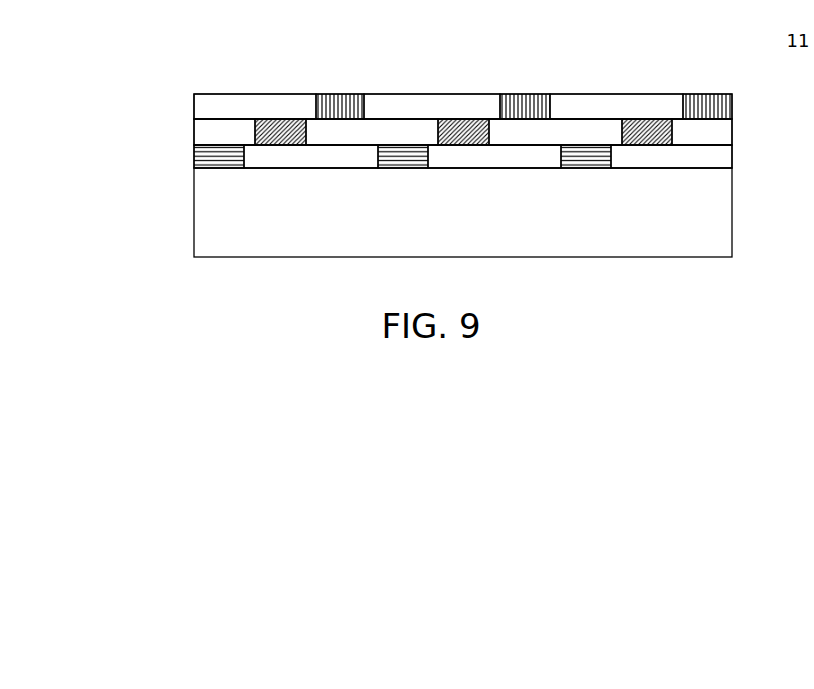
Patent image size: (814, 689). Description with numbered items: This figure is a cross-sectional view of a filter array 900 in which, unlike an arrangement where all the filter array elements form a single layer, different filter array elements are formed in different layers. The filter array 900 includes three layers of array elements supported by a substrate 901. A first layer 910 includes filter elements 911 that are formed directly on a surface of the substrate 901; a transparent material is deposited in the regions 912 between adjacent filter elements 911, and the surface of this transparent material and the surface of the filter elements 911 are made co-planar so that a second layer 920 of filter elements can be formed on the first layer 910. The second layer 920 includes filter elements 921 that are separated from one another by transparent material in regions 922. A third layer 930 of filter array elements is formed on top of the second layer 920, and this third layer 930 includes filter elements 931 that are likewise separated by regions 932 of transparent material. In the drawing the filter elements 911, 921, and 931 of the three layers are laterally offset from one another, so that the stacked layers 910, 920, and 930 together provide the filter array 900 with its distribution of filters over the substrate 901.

The filter array 900 is at (218, 283).
The substrate 901 is at (485, 235).
The first layer 910 is at (223, 160).
The filter elements 911 is at (225, 168).
The second region 912 is at (316, 157).
The second layer 920 is at (194, 131).
The filter elements 921 is at (282, 120).
The regions 922 is at (232, 130).
The third layer 930 is at (194, 107).
The filter elements 931 is at (342, 105).
The regions 932 is at (232, 105).